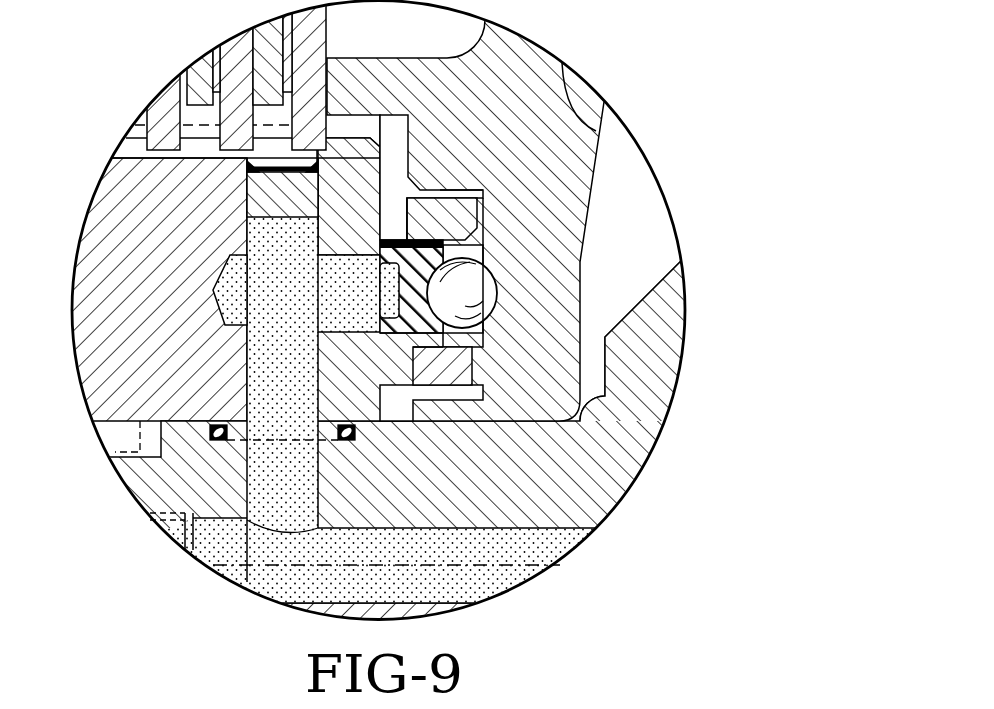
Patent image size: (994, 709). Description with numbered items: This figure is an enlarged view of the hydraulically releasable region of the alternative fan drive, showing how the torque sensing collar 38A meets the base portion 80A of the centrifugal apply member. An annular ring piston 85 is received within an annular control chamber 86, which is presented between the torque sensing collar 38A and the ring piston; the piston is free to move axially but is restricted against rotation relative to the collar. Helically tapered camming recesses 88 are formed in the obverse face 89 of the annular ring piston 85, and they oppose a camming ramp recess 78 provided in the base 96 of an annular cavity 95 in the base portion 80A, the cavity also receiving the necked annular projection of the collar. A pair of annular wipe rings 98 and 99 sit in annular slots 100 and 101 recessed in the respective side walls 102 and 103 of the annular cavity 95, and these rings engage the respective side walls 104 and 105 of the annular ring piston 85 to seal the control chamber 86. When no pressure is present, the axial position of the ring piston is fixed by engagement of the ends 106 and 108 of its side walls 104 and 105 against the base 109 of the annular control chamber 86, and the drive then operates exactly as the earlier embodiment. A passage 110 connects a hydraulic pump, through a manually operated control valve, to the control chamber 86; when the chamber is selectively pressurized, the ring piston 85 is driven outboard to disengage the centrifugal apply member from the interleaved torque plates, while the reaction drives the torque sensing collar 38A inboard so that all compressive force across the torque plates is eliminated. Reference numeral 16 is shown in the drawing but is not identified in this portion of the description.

The torque sensing collar 38A is at (80, 233).
The housing body 16 is at (610, 515).
The base portion 80A is at (530, 407).
The passage 110 is at (460, 583).
The annular slot 101 is at (421, 342).
The annular wipe ring 99 is at (481, 370).
The camming ramp recess 78 is at (497, 298).
The annular control chamber 86 is at (392, 305).
The helically tapered camming recess 88 is at (494, 276).
The obverse face 89 is at (507, 328).
The base 96 is at (478, 193).
The annular ring piston 85 is at (480, 200).
The annular cavity 95 is at (445, 195).
The annular wipe ring 98 is at (430, 240).
The annular slot 100 is at (413, 228).
The side wall 104 is at (410, 230).
The side wall 102 is at (407, 238).
The end 106 is at (377, 253).
The base 109 is at (383, 284).
The end 108 is at (390, 332).
The side wall 103 is at (413, 338).
The side wall 105 is at (432, 350).